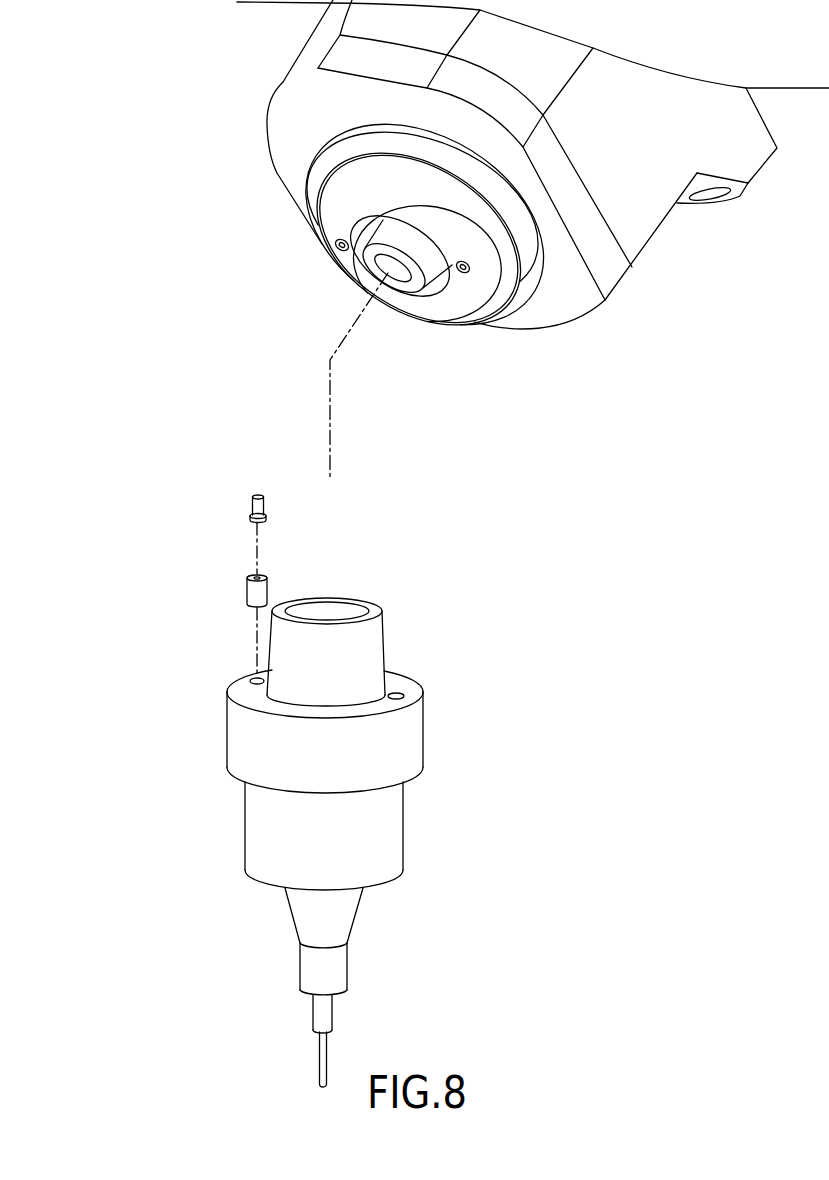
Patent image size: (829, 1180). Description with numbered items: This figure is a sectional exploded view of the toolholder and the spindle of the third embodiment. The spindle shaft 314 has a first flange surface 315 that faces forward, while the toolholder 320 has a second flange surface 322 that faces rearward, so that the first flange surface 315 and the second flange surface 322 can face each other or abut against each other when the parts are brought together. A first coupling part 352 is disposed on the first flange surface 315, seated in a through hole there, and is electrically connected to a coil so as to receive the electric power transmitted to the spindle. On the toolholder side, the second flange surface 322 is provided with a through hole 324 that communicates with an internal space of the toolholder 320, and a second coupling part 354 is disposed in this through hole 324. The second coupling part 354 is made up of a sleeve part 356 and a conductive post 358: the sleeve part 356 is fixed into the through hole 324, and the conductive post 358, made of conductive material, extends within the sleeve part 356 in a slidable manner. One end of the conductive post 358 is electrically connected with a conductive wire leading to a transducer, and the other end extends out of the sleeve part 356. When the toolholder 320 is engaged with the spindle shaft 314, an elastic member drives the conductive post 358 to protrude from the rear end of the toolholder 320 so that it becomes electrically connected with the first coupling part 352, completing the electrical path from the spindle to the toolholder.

The spindle shaft 314 is at (345, 186).
The first flange surface 315 is at (460, 300).
The first coupling part 352 is at (334, 246).
The second coupling part 354 is at (142, 585).
The sleeve part 356 is at (247, 588).
The conductive post 358 is at (250, 505).
The toolholder 320 is at (346, 809).
The second flange surface 322 is at (402, 680).
The through hole 324 is at (248, 679).